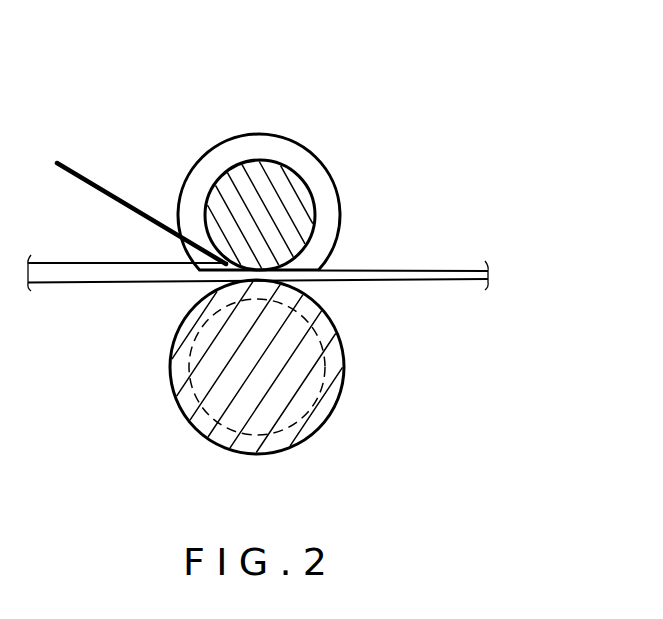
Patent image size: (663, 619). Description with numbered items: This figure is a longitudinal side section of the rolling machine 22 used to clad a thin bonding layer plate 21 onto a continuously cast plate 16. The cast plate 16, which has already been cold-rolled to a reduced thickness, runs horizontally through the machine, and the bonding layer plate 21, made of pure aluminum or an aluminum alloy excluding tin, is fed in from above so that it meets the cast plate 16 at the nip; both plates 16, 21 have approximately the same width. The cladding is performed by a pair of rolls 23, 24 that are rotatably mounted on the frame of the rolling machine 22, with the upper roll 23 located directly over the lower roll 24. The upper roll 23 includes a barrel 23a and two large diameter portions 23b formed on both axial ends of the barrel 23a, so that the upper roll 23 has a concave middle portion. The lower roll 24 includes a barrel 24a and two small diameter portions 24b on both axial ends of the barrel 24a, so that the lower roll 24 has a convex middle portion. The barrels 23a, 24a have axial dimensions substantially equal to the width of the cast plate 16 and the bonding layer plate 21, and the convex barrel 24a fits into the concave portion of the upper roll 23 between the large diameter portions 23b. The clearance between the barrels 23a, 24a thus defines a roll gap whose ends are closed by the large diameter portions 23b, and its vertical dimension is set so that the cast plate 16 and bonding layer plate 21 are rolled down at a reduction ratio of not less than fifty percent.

The continuously cast plate 16 is at (97, 283).
The thin plate for forming a bonding layer 21 is at (110, 192).
The rolling machine 22 is at (288, 108).
The upper roll 23 is at (325, 164).
The barrel of the upper roll 23a is at (243, 163).
The large diameter portions 23b is at (340, 212).
The lower roll 24 is at (316, 389).
The barrel of the lower roll 24a is at (330, 350).
The small diameter portions 24b is at (343, 378).